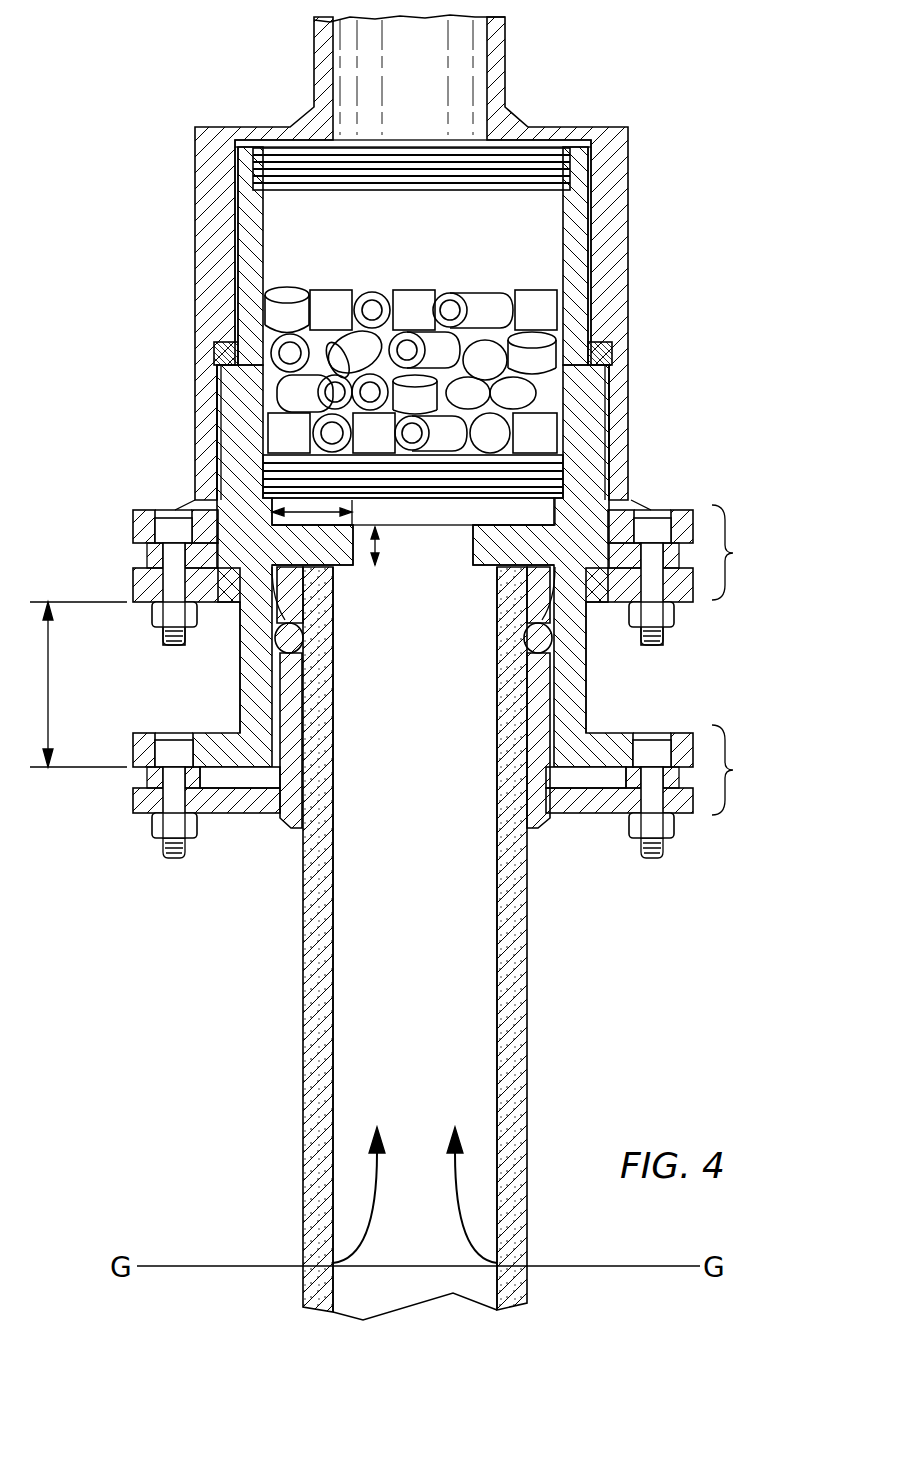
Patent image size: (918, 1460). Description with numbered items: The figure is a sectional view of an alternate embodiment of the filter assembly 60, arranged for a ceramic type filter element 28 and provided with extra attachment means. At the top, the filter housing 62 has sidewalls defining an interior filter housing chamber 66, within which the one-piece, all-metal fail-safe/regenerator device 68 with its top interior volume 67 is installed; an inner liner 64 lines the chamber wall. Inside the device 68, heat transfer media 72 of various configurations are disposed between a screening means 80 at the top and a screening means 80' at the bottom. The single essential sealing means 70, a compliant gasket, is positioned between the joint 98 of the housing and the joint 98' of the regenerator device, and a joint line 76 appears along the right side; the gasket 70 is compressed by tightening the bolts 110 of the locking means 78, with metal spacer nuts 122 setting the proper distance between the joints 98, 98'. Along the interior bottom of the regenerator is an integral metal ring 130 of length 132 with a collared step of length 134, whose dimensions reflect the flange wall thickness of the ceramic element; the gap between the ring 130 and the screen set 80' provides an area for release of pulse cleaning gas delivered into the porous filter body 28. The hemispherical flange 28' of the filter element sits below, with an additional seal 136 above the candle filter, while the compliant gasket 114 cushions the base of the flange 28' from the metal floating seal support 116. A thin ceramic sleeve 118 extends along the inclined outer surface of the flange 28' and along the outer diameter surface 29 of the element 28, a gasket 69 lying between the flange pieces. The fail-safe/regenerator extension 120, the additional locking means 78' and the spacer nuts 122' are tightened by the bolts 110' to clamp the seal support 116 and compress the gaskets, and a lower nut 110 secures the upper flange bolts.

The filter element 28 is at (447, 943).
The hemispherical flange 28' is at (413, 609).
The outer diameter surface 29 is at (303, 928).
The filter assembly 60 is at (64, 523).
The filter housing 62 is at (628, 212).
The liner 64 is at (243, 228).
The interior filter housing chamber 66 is at (587, 175).
The top interior volume 67 is at (503, 215).
The fail-safe/regenerator device 68 is at (245, 260).
The gasket 69 is at (240, 708).
The sealing means 70 is at (214, 353).
The heat transfer media 72 is at (490, 300).
The housing joint 76 is at (610, 405).
The locking means 78 is at (467, 575).
The additional locking means 78' is at (470, 781).
The screening means 80 is at (411, 204).
The screening means 80' is at (413, 490).
The joint 98 is at (370, 244).
The joint 98' is at (184, 432).
The bolt 110 is at (392, 641).
The bolt 110' is at (378, 838).
The compliant gasket 114 is at (330, 670).
The floating seal support 116 is at (228, 813).
The flexible sleeve 118 is at (300, 797).
The fail-safe/regenerator extension 120 is at (78, 684).
The metal spacer nuts 122 is at (370, 599).
The spacer nuts 122' is at (376, 768).
The integral metal ring 130 is at (478, 565).
The length 132 is at (300, 510).
The length 134 is at (380, 548).
The seal 136 is at (538, 632).